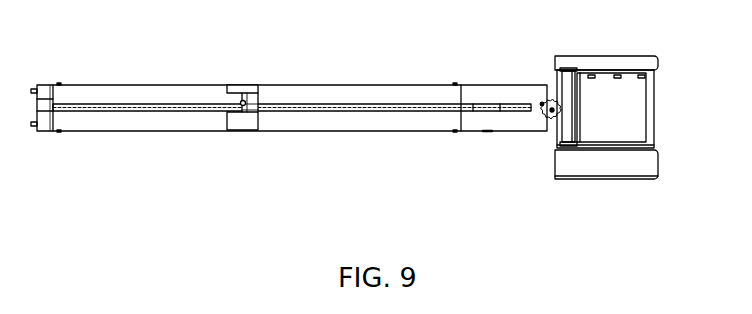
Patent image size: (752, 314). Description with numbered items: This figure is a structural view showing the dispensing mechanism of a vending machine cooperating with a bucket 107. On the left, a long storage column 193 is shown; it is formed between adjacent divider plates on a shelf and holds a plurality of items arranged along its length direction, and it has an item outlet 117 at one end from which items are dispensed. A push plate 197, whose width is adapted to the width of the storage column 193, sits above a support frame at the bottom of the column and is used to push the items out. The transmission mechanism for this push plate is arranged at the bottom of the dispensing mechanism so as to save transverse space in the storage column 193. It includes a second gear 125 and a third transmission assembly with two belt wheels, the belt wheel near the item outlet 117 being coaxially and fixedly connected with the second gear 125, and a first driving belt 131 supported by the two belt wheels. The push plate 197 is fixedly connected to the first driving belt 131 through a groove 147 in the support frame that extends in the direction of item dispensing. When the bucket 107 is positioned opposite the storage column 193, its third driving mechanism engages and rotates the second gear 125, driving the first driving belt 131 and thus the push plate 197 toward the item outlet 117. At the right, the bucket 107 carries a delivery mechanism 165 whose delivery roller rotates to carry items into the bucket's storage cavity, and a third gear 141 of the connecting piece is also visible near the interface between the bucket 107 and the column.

The bucket 107 is at (612, 103).
The item outlet 117 is at (535, 171).
The second gear 125 is at (541, 103).
The first driving belt 131 is at (304, 104).
The third gear 141 is at (546, 122).
The groove 147 is at (156, 88).
The delivery mechanism 165 is at (570, 120).
The storage column 193 is at (405, 93).
The push plate 197 is at (243, 100).